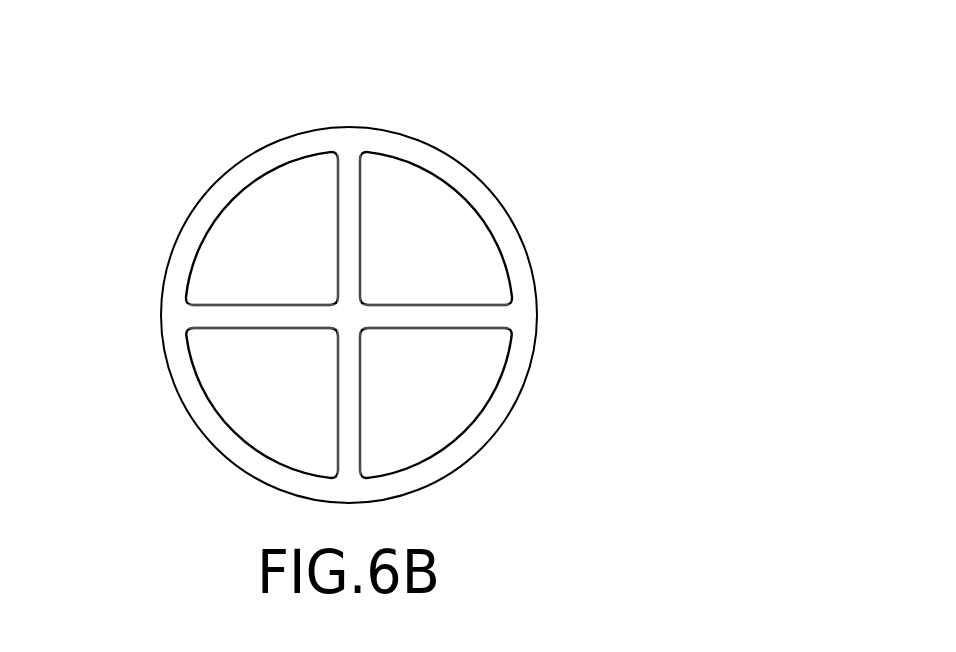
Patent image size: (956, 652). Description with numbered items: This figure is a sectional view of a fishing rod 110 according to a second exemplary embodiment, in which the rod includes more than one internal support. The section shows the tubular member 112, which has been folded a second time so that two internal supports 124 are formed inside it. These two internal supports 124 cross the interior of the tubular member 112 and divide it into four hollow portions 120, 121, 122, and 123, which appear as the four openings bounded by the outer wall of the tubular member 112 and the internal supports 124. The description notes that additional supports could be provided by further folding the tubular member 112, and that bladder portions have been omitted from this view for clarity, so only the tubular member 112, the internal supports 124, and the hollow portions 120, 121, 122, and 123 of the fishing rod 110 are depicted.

The fishing rod 110 is at (389, 254).
The tubular member 112 is at (537, 338).
The hollow portion 120 is at (253, 393).
The hollow portion 121 is at (235, 233).
The hollow portion 122 is at (440, 410).
The hollow portion 123 is at (423, 207).
The internal supports 124 is at (340, 205).